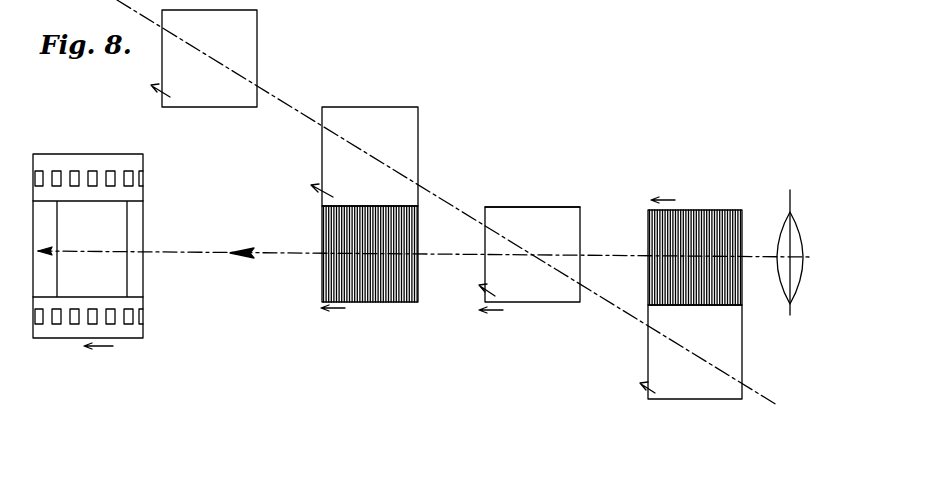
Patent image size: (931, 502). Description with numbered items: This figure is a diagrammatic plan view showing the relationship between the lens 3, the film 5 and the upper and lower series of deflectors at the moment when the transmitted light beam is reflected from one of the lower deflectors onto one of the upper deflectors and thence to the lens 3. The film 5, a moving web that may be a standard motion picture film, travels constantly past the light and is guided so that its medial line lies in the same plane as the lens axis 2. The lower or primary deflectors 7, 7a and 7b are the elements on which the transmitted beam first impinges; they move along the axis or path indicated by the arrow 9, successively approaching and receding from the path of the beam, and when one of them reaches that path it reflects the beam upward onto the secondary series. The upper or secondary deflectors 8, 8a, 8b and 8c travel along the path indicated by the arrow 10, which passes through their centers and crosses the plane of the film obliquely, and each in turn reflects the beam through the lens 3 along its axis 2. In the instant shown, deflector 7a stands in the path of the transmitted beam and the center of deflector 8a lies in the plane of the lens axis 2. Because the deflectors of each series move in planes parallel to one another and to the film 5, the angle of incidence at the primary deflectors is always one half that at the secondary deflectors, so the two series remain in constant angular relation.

The lens axis 2 is at (289, 255).
The lens 3 is at (797, 218).
The film 5 is at (70, 338).
The lower deflector 7 is at (695, 210).
The lower deflector 7a is at (565, 207).
The lower deflector 7b is at (370, 302).
The upper deflector 8 is at (678, 399).
The upper deflector 8a is at (525, 302).
The upper deflector 8b is at (418, 142).
The upper deflector 8c is at (258, 44).
The path of primary deflectors 9 is at (297, 253).
The path of secondary deflectors 10 is at (765, 400).